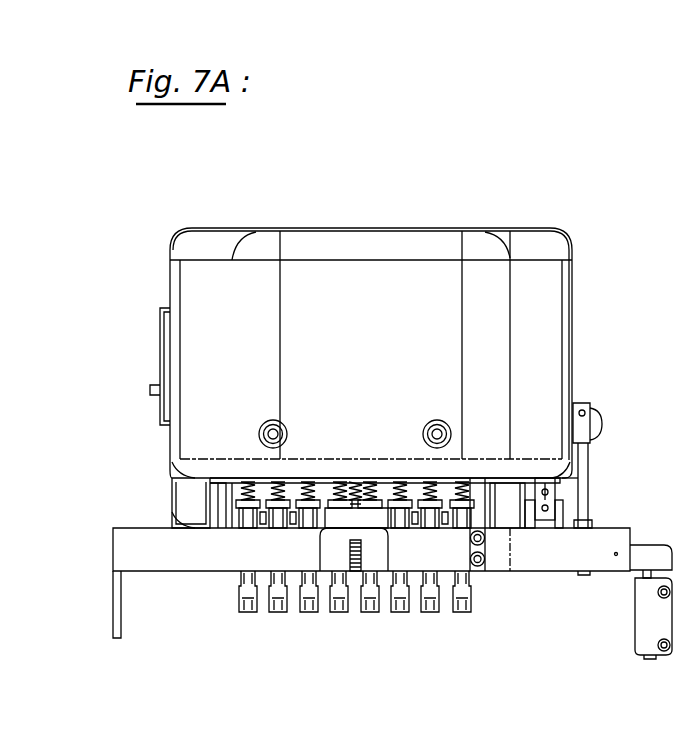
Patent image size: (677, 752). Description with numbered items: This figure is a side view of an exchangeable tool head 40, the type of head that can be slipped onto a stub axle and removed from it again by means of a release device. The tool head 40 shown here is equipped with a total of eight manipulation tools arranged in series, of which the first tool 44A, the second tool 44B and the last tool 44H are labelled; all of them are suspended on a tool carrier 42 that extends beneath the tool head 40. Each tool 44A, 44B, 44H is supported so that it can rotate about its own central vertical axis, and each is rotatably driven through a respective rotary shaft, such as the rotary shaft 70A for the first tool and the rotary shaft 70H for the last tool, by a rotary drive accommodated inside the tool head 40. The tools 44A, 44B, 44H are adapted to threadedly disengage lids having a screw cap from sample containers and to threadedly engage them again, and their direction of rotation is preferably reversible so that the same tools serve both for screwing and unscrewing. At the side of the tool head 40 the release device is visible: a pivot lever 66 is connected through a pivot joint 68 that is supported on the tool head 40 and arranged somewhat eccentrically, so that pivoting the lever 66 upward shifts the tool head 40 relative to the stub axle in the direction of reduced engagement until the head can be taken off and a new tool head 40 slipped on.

The tool head 40 is at (400, 268).
The tool carrier 42 is at (600, 550).
The manipulation tool 44A is at (242, 614).
The manipulation tool 44B is at (276, 614).
The manipulation tool 44H is at (465, 614).
The pivot lever 66 is at (583, 457).
The pivot joint 68 is at (584, 414).
The rotary shaft 70A is at (243, 478).
The rotary shaft 70H is at (463, 478).